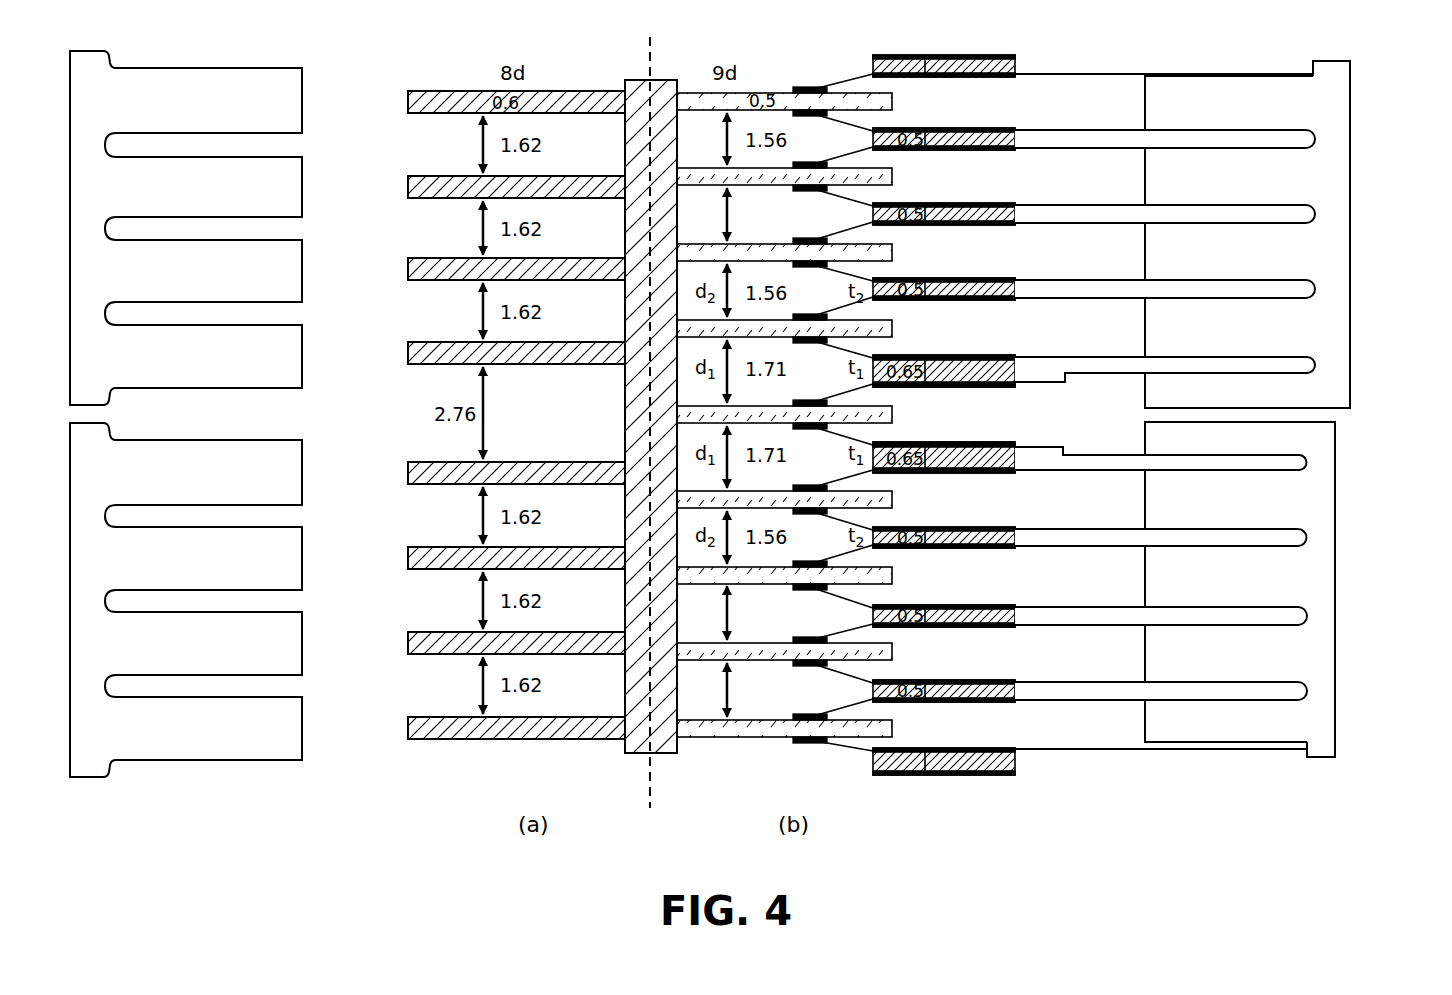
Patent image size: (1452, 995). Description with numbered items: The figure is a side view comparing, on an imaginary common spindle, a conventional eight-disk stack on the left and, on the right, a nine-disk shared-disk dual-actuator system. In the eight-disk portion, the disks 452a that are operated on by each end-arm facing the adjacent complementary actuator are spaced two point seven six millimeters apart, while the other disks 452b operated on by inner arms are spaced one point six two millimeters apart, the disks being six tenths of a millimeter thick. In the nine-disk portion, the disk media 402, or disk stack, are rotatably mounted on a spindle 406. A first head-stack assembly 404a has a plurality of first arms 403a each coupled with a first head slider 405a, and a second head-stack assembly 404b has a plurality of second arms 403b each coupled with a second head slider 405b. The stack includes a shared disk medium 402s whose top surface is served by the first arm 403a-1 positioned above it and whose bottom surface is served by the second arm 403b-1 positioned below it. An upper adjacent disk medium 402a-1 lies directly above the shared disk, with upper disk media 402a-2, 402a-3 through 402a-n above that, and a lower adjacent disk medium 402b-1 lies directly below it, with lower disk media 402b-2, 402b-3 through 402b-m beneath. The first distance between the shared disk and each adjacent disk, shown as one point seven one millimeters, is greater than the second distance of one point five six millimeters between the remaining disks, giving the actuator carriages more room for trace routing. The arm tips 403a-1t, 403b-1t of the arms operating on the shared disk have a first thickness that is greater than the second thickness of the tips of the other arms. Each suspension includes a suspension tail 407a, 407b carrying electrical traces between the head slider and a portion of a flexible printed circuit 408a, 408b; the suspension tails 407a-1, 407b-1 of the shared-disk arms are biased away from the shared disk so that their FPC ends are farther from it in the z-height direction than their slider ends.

The disk media 402 is at (840, 418).
The upper disk medium 402a-n is at (837, 62).
The upper disk medium 402a-3 is at (892, 176).
The upper disk medium 402a-2 is at (892, 252).
The upper adjacent disk medium 402a-1 is at (892, 328).
The shared disk medium 402s is at (892, 414).
The lower adjacent disk medium 402b-1 is at (892, 499).
The lower disk medium 402b-2 is at (892, 575).
The lower disk medium 402b-3 is at (892, 651).
The lower disk medium 402b-m is at (840, 771).
The first arms 403a is at (1094, 234).
The second arms 403b is at (1090, 599).
The first arm 403a-1 is at (1094, 370).
The second arm 403b-1 is at (1090, 456).
The arm tip 403a-1t is at (1157, 386).
The arm tip 403b-1t is at (1105, 444).
The first head-stack assembly 404a is at (1269, 215).
The second head-stack assembly 404b is at (1249, 626).
The first head slider 405a is at (808, 84).
The second head slider 405b is at (808, 748).
The spindle 406 is at (668, 760).
The suspension tail 407a is at (1265, 215).
The suspension tail 407b is at (1247, 626).
The suspension tail 407a-1 is at (1137, 374).
The suspension tail 407b-1 is at (1128, 456).
The flexible printed circuit 408a is at (1317, 393).
The flexible printed circuit 408b is at (1313, 435).
The disks 452a is at (408, 352).
The disks 452b is at (402, 91).